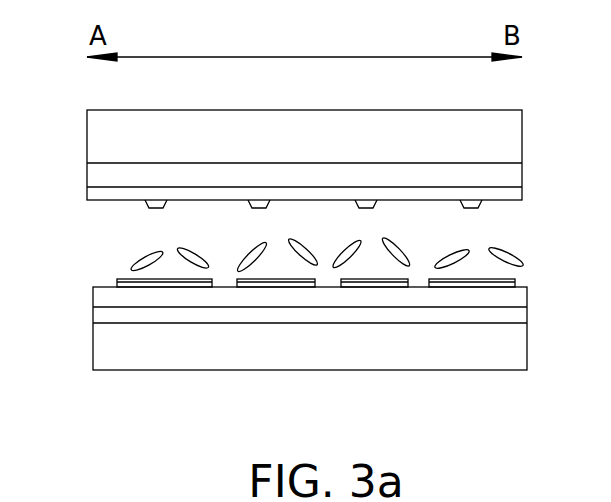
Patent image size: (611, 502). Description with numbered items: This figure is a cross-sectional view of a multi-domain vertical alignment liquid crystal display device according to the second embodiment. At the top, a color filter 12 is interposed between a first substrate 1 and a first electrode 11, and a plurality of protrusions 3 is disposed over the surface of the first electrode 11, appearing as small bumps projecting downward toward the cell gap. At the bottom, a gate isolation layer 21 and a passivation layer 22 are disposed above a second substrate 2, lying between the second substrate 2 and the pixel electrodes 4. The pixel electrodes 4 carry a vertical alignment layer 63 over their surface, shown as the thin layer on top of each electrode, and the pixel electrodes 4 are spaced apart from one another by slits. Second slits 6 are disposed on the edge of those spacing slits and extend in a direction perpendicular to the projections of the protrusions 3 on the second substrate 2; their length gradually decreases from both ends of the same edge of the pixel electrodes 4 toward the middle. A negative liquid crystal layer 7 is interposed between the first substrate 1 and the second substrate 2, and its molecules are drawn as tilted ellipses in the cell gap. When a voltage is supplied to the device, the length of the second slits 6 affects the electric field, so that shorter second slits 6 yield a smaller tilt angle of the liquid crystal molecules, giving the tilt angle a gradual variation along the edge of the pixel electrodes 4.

The first substrate 1 is at (513, 143).
The first electrode 11 is at (512, 193).
The color filter 12 is at (98, 173).
The protrusions 3 is at (262, 204).
The negative liquid crystal layer 7 is at (140, 242).
The second substrate 2 is at (513, 347).
The gate isolation layer 21 is at (100, 316).
The passivation layer 22 is at (100, 297).
The pixel electrodes 4 is at (516, 283).
The vertical alignment layer 63 is at (515, 281).
The second slits 6 is at (228, 283).